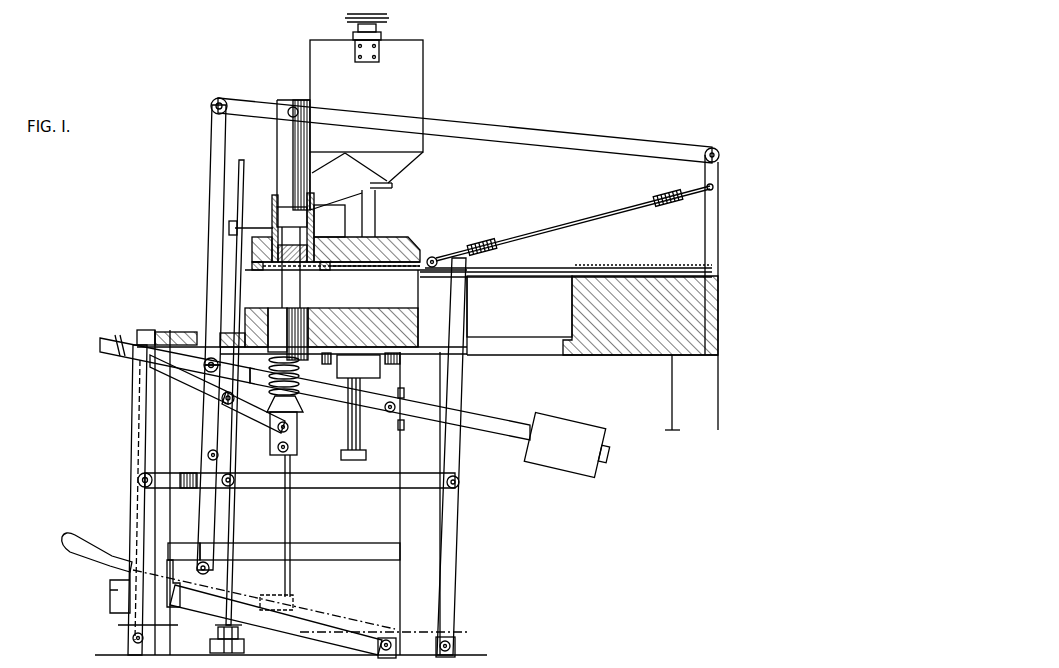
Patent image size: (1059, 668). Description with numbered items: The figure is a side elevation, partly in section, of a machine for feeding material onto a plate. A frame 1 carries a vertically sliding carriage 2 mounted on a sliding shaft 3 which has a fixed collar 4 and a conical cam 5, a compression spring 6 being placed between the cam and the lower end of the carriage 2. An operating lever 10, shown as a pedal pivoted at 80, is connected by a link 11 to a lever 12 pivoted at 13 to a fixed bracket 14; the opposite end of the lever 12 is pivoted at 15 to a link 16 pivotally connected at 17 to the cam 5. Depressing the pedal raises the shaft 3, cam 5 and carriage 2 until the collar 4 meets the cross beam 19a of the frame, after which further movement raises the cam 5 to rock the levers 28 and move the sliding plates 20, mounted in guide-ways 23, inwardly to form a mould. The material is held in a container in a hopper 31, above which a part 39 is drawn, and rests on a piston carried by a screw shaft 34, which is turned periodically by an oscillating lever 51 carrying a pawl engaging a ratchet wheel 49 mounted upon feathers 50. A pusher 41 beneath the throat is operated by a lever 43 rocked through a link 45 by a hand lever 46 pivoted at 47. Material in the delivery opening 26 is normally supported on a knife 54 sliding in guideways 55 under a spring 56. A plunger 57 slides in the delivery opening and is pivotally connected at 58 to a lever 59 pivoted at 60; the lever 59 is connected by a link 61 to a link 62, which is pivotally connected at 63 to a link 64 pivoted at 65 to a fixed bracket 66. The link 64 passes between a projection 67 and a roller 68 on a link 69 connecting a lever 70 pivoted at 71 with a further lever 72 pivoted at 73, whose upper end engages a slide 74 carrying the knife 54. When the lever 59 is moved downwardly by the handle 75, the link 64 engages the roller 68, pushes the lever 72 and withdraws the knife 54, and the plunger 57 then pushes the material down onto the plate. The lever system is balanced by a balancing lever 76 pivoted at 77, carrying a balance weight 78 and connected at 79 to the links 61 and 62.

The frame 1 is at (402, 327).
The carriage 2 is at (277, 318).
The vertically sliding shaft 3 is at (289, 508).
The fixed collar 4 is at (292, 598).
The conical cam 5 is at (301, 408).
The compression spring 6 is at (270, 362).
The operating lever 10 is at (215, 598).
The link 11 is at (141, 492).
The lever 12 is at (193, 380).
The pivot 13 is at (253, 414).
The fixed bracket 14 is at (236, 397).
The pivot 15 is at (290, 428).
The link 16 is at (290, 447).
The pivotal connection 17 is at (294, 452).
The cross beam 19a is at (292, 553).
The sliding plates 20 is at (283, 275).
The guide-ways 23 is at (256, 266).
The delivery opening 26 is at (329, 221).
The levers 28 is at (293, 300).
The hopper 31 is at (366, 138).
The screw shaft 34 is at (366, 454).
The motor pulley 39 is at (389, 18).
The pusher 41 is at (305, 203).
The lever 43 is at (253, 227).
The link 45 is at (228, 229).
The hand lever 46 is at (222, 170).
The pivot 47 is at (244, 643).
The ratchet wheel 49 is at (402, 362).
The feathers 50 is at (361, 429).
The oscillating lever 51 is at (337, 369).
The knife 54 is at (342, 273).
The guideways 55 is at (433, 256).
The spring 56 is at (524, 236).
The plunger 57 is at (286, 133).
The pivotal connection 58 is at (294, 107).
The lever 59 is at (500, 134).
The pivot 60 is at (712, 149).
The link 61 is at (212, 118).
The link 62 is at (208, 426).
The pivotal connection 63 is at (207, 456).
The link 64 is at (204, 518).
The pivot 65 is at (210, 561).
The fixed bracket 66 is at (180, 562).
The projection 67 is at (192, 489).
The roller 68 is at (233, 476).
The link 69 is at (378, 489).
The lever 70 is at (136, 524).
The pivot 71 is at (132, 638).
The lever 72 is at (452, 518).
The pivot 73 is at (452, 647).
The slide 74 is at (523, 276).
The handle 75 is at (105, 340).
The balancing lever 76 is at (484, 427).
The pivot 77 is at (401, 404).
The balance weight 78 is at (568, 446).
The connection 79 is at (211, 357).
The pivot 80 is at (383, 640).